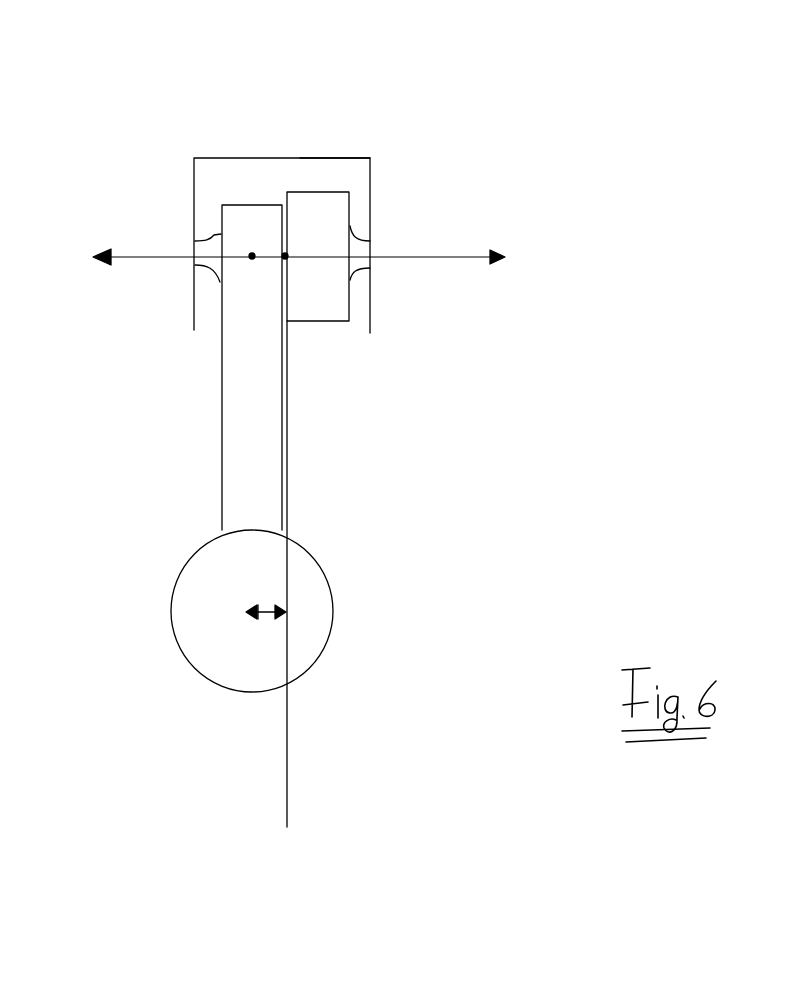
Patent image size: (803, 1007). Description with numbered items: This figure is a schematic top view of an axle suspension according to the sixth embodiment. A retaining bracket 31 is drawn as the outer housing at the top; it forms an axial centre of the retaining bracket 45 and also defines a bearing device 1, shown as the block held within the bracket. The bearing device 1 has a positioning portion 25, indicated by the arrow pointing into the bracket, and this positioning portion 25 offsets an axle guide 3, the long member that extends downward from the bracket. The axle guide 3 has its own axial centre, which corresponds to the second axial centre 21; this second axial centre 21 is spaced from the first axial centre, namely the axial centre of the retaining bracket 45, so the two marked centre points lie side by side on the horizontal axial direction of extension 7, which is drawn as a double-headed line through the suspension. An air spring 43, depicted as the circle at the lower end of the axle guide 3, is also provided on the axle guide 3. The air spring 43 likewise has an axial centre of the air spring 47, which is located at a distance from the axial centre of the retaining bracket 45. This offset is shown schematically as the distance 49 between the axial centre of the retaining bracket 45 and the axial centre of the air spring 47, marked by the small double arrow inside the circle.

The bearing device 1 is at (360, 348).
The axle guide 3 is at (222, 462).
The axial direction of extension 7 is at (138, 257).
The second axial centre 21 is at (252, 258).
The positioning portion 25 is at (323, 176).
The retaining bracket 31 is at (372, 172).
The air spring 43 is at (336, 598).
The axial centre of the retaining bracket 45 is at (287, 258).
The axial centre of the air spring 47 is at (249, 614).
The distance between the axial centre of the retaining bracket and the air spring 49 is at (266, 617).